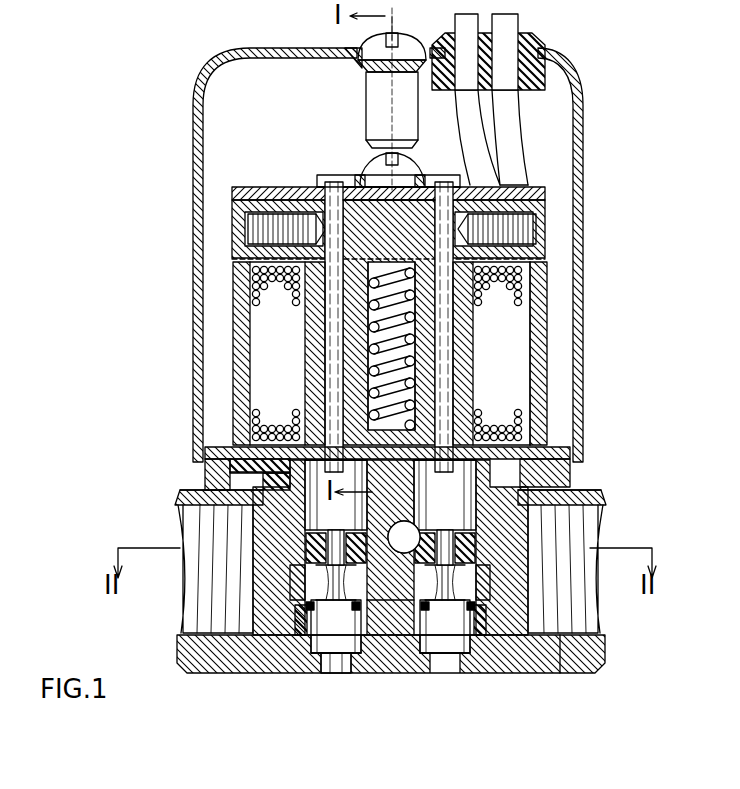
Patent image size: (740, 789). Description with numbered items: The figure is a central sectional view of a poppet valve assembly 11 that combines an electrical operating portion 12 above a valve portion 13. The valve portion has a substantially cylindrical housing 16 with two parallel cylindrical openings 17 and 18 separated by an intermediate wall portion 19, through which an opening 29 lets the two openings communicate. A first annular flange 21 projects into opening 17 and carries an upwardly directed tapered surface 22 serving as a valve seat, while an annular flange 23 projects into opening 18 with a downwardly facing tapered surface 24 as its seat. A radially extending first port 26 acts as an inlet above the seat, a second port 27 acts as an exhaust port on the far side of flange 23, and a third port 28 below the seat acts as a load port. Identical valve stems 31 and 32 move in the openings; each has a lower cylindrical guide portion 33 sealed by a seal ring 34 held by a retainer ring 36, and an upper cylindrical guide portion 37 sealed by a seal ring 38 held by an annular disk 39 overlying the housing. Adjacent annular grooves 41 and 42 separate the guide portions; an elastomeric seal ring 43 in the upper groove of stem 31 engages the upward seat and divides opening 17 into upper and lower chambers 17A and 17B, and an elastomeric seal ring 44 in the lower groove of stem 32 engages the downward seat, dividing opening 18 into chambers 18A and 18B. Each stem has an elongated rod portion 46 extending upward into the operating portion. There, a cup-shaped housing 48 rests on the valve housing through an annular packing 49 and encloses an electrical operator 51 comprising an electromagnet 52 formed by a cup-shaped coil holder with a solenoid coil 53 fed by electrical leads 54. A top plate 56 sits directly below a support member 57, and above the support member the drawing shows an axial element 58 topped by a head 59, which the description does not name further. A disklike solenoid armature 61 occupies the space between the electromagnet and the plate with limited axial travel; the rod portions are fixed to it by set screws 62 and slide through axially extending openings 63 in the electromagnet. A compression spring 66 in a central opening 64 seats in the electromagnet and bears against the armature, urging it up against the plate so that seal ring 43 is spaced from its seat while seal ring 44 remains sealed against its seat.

The poppet valve assembly 11 is at (112, 182).
The electrical operating portion 12 is at (595, 220).
The valve portion 13 is at (613, 490).
The valve housing 16 is at (578, 660).
The cylindrical opening 17 is at (362, 662).
The upper chamber 17A is at (312, 508).
The lower chamber 17B is at (336, 623).
The cylindrical opening 18 is at (478, 660).
The upper chamber 18A is at (478, 508).
The lower chamber 18B is at (446, 655).
The intermediate wall portion 19 is at (400, 620).
The first annular flange 21 is at (326, 582).
The tapered surface 22 is at (306, 545).
The annular flange 23 is at (436, 545).
The tapered surface 24 is at (455, 582).
The first port 26 is at (210, 612).
The second port 27 is at (402, 524).
The third port 28 is at (578, 610).
The opening 29 is at (358, 600).
The valve stem 31 is at (338, 680).
The valve stem 32 is at (520, 650).
The cylindrical guide portion 33 is at (334, 622).
The seal ring 34 is at (298, 620).
The retainer ring 36 is at (320, 615).
The cylindrical guide portion 37 is at (300, 416).
The seal ring 38 is at (300, 448).
The annular disk 39 is at (222, 468).
The annular groove 41 is at (250, 530).
The annular groove 42 is at (348, 560).
The elastomeric seal ring 43 is at (300, 474).
The elastomeric seal ring 44 is at (462, 610).
The rod portion 46 is at (333, 318).
The cup-shaped housing 48 is at (581, 120).
The annular packing 49 is at (232, 472).
The electrical operator 51 is at (560, 359).
The electromagnet 52 is at (262, 288).
The solenoid coil 53 is at (490, 288).
The electrical leads 54 is at (500, 38).
The top plate 56 is at (524, 184).
The support member 57 is at (398, 178).
The adjusting screw shank 58 is at (380, 115).
The adjusting screw head 59 is at (388, 52).
The solenoid armature 61 is at (338, 192).
The set screw 62 is at (252, 228).
The axially extending opening 63 is at (334, 358).
The central opening 64 is at (416, 198).
The compression spring 66 is at (372, 375).